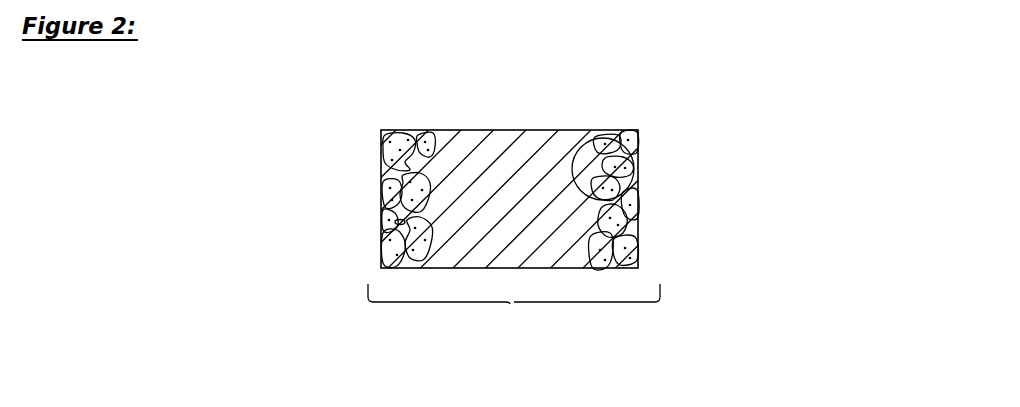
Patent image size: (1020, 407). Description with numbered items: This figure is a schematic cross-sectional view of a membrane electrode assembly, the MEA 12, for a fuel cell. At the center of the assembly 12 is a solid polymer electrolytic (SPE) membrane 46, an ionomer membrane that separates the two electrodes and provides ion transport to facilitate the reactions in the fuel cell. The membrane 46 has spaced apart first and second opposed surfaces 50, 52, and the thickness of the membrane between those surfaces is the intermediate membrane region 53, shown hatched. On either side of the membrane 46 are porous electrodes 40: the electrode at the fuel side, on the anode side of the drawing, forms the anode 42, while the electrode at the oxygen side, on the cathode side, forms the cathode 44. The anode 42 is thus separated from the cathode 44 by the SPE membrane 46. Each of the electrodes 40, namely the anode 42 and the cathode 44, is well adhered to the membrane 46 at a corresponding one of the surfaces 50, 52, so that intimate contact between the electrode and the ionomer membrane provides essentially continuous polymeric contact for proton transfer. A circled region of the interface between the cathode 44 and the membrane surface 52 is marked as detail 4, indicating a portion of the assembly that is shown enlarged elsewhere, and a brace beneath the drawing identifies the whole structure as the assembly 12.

The detail region shown in FIG. 4 is at (635, 157).
The membrane electrode assembly 12 is at (510, 303).
The porous electrodes 40 is at (518, 200).
The anode 42 is at (382, 220).
The cathode 44 is at (625, 229).
The solid polymer electrolytic membrane 46 is at (506, 165).
The first surface 50 is at (444, 150).
The second surface 52 is at (582, 145).
The intermediate membrane region 53 is at (480, 162).